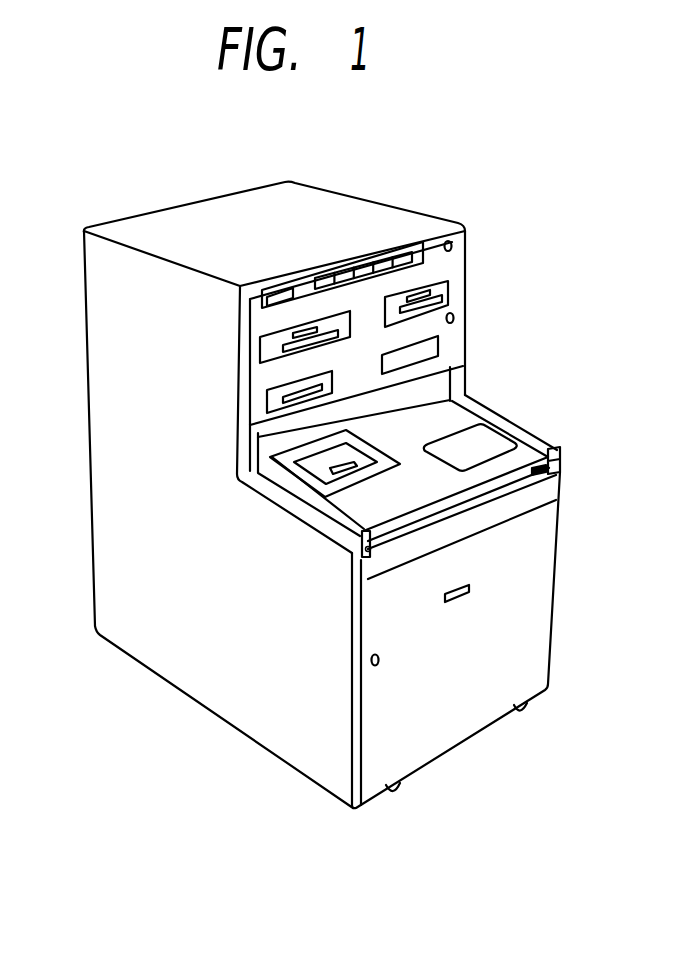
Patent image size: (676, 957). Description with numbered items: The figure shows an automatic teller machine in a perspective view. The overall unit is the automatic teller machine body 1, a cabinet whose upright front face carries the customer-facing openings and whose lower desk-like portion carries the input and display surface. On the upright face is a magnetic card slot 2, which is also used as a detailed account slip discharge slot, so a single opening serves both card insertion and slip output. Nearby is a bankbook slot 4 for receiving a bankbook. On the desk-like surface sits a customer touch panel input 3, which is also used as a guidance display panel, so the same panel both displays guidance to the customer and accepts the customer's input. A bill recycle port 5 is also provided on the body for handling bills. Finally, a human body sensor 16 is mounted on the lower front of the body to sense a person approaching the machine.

The automatic teller machine body 1 is at (100, 303).
The magnetic card slot 2 is at (443, 282).
The customer touch panel input 3 is at (492, 442).
The bankbook slot 4 is at (263, 350).
The bill recycle port 5 is at (315, 468).
The human body sensor 16 is at (470, 585).